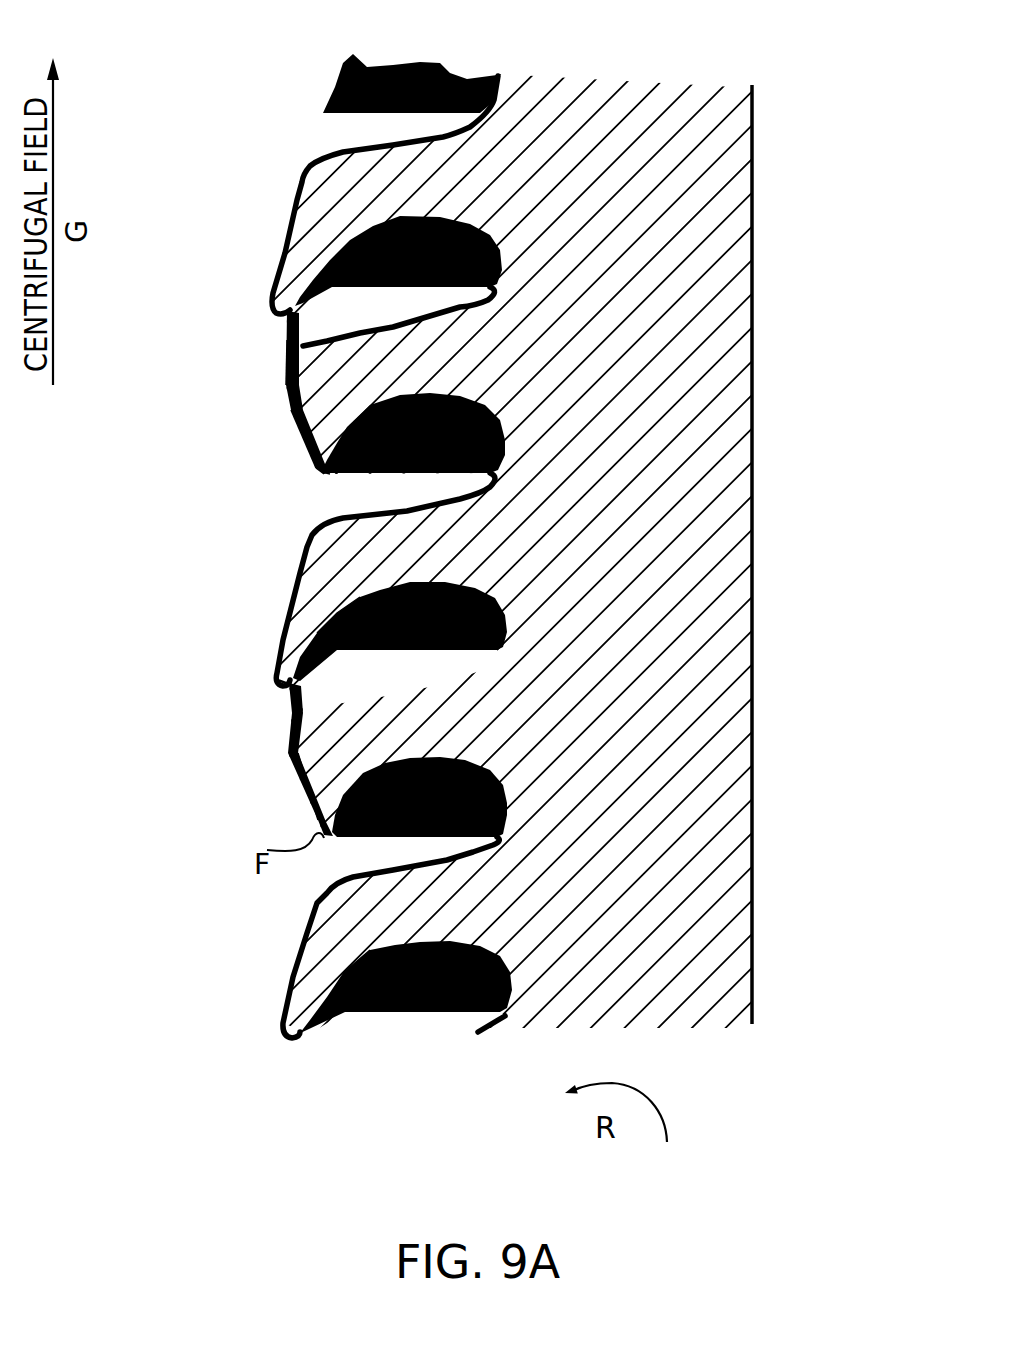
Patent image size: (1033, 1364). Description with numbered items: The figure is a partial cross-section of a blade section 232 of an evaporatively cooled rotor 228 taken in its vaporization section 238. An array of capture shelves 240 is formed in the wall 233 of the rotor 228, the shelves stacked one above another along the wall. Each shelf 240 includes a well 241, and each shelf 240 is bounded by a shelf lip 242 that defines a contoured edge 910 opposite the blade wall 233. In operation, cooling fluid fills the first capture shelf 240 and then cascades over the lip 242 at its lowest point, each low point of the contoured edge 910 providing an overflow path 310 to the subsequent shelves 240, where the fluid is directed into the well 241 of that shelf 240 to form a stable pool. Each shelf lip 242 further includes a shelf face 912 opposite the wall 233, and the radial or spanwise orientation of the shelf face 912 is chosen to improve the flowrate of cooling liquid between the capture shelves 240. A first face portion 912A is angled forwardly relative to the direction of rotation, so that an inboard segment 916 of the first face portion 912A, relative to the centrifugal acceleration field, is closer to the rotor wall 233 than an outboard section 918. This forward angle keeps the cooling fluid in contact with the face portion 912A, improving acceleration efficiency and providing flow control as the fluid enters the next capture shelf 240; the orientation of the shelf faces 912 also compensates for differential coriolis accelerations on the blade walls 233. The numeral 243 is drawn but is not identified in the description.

The rotor 228 is at (770, 47).
The blade section 232 is at (760, 557).
The wall 233 is at (700, 244).
The vaporization section 238 is at (104, 539).
The capture shelves 240 is at (380, 390).
The well 241 is at (338, 624).
The shelf lip 242 is at (316, 490).
The deposit trailing surface 243 is at (272, 650).
The overflow path 310 is at (285, 340).
The contoured edge 910 is at (313, 477).
The shelf face 912 is at (293, 198).
The first face portion 912A is at (302, 795).
The inboard segment 916 is at (310, 447).
The outboard section 918 is at (287, 368).